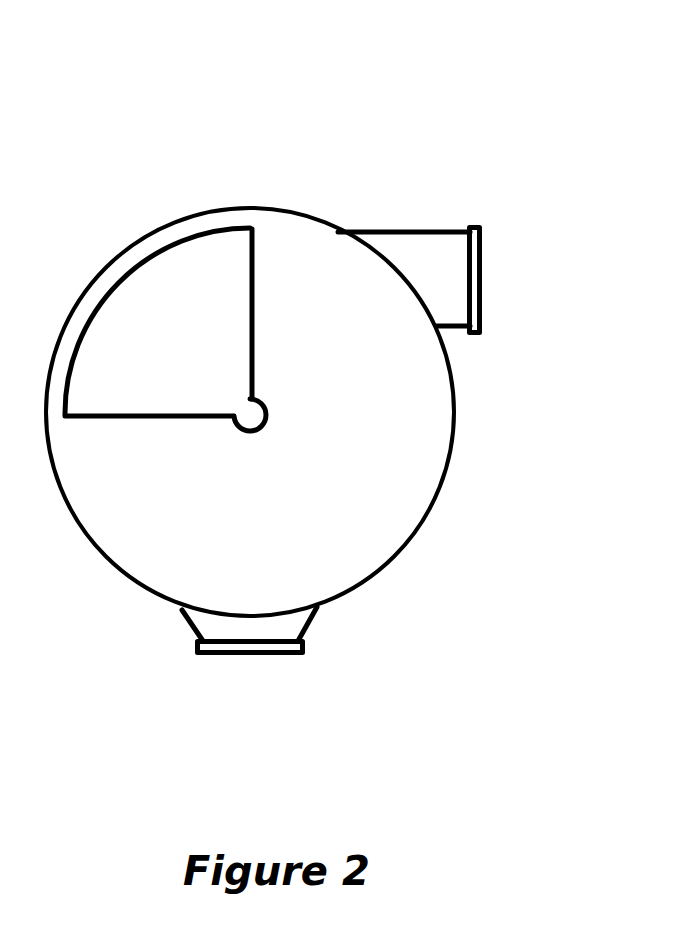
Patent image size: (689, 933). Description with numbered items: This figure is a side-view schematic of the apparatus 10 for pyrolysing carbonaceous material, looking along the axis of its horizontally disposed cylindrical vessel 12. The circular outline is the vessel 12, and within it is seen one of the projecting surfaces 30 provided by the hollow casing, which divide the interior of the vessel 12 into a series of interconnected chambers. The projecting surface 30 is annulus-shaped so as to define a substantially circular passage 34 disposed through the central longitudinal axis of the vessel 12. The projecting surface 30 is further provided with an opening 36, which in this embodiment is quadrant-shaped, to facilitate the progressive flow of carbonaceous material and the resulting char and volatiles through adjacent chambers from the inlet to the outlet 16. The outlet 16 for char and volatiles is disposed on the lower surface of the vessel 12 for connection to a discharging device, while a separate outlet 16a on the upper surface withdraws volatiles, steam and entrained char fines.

The apparatus 10 is at (318, 126).
The vessel 12 is at (445, 480).
The outlet 16 is at (255, 656).
The separate outlet 16a is at (480, 262).
The projecting surface 30 is at (360, 382).
The circular passage 34 is at (260, 415).
The opening 36 is at (138, 303).